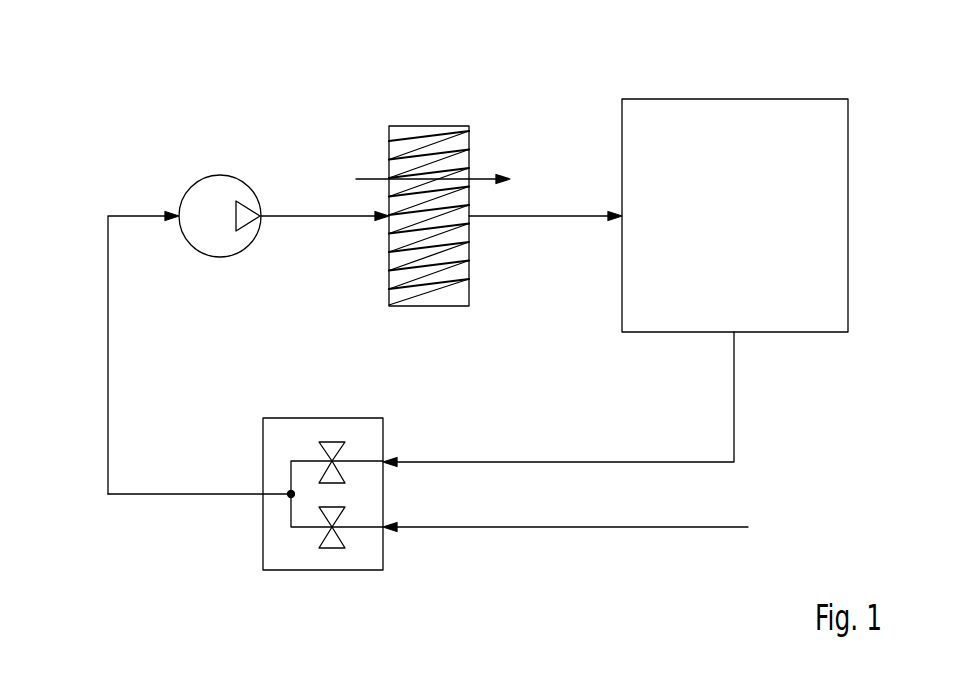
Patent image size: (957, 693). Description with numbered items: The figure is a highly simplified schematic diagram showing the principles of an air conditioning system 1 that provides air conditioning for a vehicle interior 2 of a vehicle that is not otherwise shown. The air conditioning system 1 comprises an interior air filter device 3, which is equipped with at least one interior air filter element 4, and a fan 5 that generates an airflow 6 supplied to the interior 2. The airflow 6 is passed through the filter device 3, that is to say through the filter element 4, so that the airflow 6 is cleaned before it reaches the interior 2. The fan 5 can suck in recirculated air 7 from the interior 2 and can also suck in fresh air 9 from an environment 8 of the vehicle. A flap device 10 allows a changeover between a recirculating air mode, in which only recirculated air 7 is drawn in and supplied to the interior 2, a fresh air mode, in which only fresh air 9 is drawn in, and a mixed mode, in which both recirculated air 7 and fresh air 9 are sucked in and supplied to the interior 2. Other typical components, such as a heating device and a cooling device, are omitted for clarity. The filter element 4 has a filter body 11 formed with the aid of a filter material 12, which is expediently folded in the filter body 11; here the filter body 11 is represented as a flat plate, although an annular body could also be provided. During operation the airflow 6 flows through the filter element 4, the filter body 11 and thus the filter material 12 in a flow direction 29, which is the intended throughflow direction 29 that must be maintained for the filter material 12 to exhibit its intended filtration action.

The air conditioning system 1 is at (146, 124).
The vehicle interior 2 is at (728, 229).
The interior air filter device 3 is at (428, 112).
The interior air filter element 4 is at (460, 213).
The fan 5 is at (218, 174).
The airflow 6 is at (287, 215).
The recirculated air 7 is at (532, 461).
The environment 8 is at (771, 539).
The fresh air 9 is at (533, 528).
The flap device 10 is at (322, 417).
The filter body 11 is at (447, 320).
The filter material 12 is at (447, 267).
The flow direction 29 is at (363, 177).